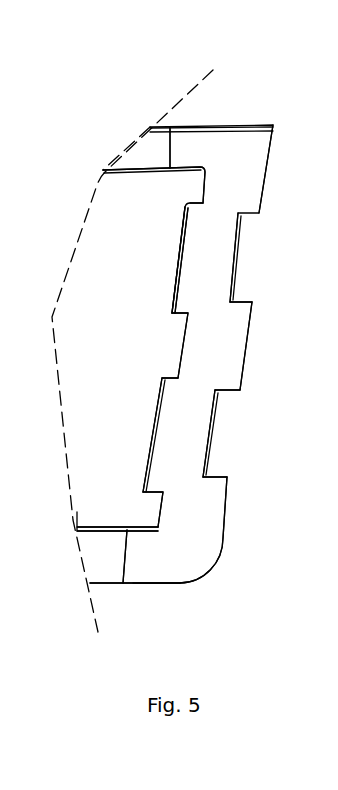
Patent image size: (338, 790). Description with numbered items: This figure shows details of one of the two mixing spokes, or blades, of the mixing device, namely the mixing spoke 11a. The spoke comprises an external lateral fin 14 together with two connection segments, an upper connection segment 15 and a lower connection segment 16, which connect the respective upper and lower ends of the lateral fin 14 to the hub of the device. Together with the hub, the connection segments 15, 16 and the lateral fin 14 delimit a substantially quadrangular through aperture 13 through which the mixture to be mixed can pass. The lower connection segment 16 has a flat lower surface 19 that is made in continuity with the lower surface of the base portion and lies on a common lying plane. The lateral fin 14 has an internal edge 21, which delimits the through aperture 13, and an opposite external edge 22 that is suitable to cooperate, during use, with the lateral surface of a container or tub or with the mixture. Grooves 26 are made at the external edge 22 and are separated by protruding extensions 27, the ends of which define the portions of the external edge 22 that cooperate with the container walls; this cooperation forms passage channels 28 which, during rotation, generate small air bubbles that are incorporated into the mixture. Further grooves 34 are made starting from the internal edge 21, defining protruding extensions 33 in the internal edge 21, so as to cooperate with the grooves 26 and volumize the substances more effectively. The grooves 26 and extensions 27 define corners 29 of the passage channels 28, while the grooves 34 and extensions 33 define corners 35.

The mixing spoke 11a is at (249, 96).
The through aperture 13 is at (92, 523).
The external lateral fin 14 is at (183, 556).
The upper connection segment 15 is at (141, 145).
The lower connection segment 16 is at (108, 580).
The flat lower surface 19 is at (134, 588).
The internal edge 21 is at (177, 238).
The external edge 22 is at (225, 517).
The grooves 26 is at (248, 249).
The extensions 27 is at (275, 169).
The passage channels 28 is at (236, 299).
The corners 29 is at (206, 475).
The protruding extensions 33 is at (165, 268).
The further grooves 34 is at (194, 182).
The corners 35 is at (200, 201).